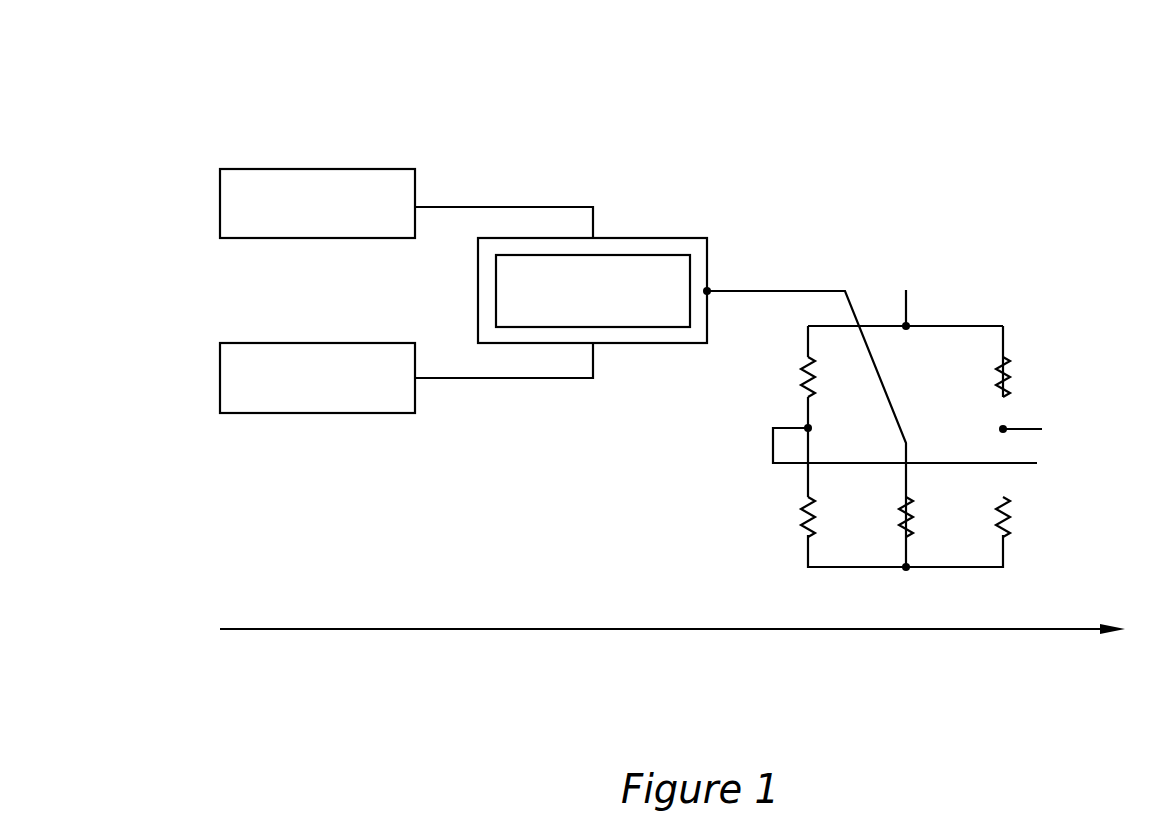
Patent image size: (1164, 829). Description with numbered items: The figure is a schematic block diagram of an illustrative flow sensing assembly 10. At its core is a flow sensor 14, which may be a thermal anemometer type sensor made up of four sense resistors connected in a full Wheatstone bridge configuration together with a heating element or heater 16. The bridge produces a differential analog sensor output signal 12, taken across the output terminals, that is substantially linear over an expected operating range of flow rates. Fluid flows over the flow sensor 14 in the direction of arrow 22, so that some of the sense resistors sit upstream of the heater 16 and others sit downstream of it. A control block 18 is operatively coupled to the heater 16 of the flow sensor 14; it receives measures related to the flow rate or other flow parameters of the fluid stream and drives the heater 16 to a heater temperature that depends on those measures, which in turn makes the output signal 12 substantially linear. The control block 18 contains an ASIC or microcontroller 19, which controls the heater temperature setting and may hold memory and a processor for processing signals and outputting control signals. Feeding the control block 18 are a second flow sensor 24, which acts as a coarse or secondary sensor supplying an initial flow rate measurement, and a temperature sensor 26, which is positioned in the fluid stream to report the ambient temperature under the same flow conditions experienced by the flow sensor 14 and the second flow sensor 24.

The flow sensing assembly 10 is at (912, 97).
The analog sensor output signal 12 is at (1025, 428).
The flow sensor 14 is at (998, 278).
The heater 16 is at (910, 497).
The control block 18 is at (645, 238).
The ASIC or microcontroller 19 is at (636, 327).
The arrow 22 is at (436, 629).
The second flow sensor 24 is at (318, 342).
The temperature sensor 26 is at (317, 168).